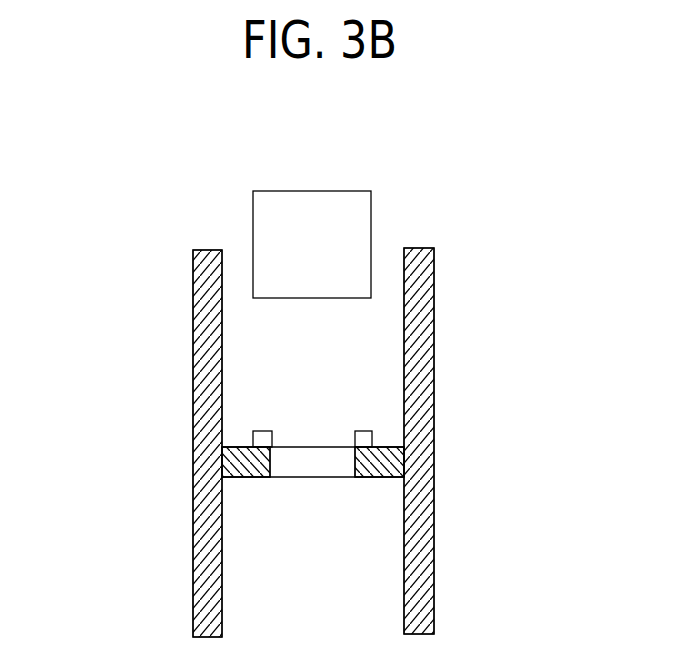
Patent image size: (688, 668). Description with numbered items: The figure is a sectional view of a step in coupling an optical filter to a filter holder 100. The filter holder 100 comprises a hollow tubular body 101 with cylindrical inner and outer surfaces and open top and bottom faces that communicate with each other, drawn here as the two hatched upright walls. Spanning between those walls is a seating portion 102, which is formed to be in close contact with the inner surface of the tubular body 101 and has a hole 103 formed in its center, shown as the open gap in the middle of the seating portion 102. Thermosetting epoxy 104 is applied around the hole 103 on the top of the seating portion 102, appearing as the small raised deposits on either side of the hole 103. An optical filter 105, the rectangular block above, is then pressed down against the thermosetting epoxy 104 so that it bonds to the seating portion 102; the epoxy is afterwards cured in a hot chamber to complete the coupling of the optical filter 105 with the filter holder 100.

The filter holder 100 is at (304, 385).
The hollow tubular body 101 is at (434, 296).
The seating portion 102 is at (248, 455).
The hole 103 is at (335, 467).
The thermosetting epoxy 104 is at (362, 440).
The optical filter 105 is at (344, 222).